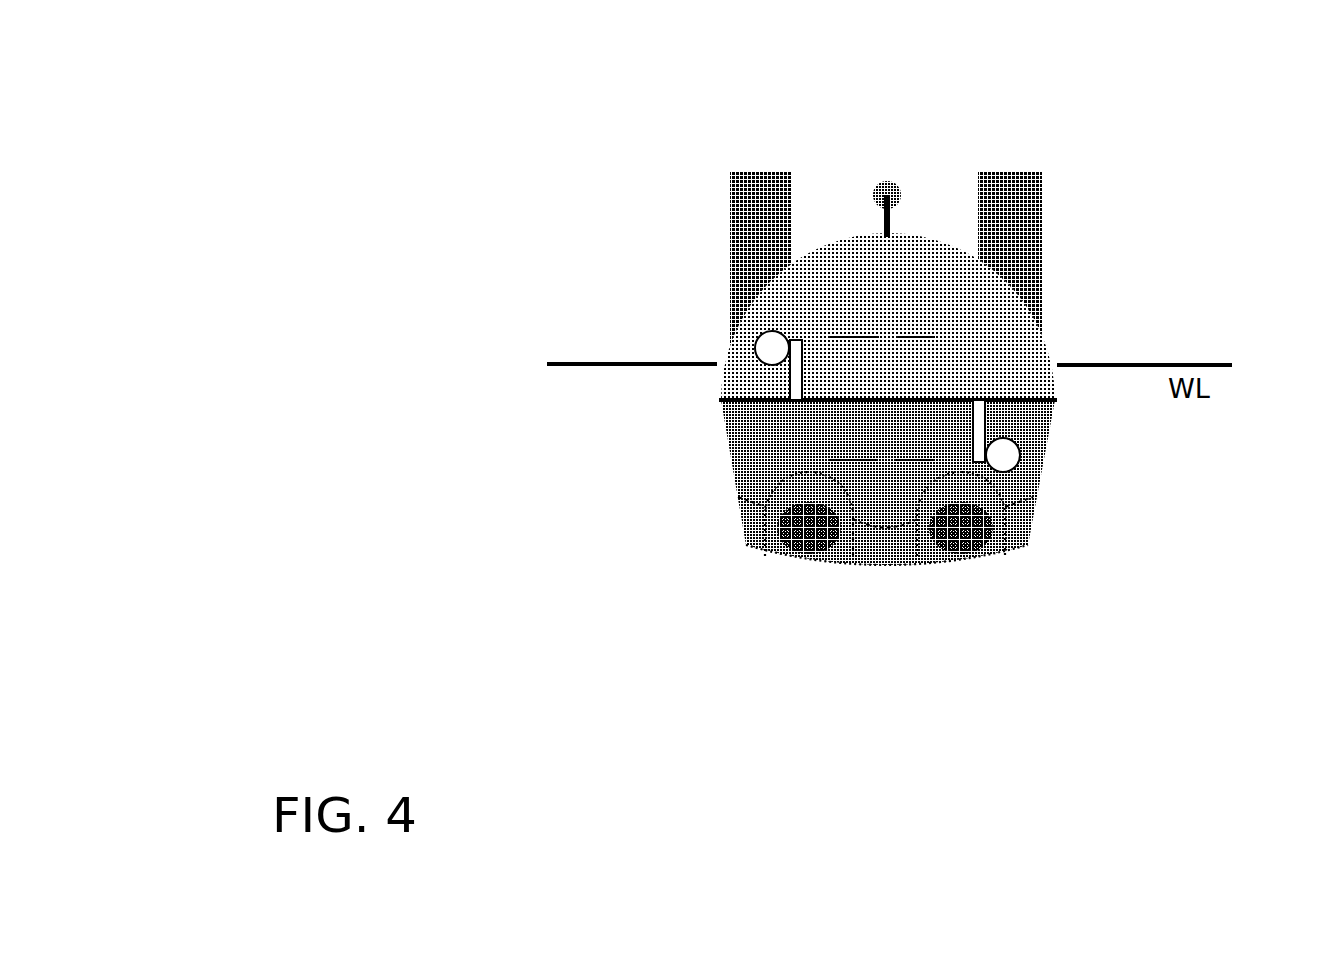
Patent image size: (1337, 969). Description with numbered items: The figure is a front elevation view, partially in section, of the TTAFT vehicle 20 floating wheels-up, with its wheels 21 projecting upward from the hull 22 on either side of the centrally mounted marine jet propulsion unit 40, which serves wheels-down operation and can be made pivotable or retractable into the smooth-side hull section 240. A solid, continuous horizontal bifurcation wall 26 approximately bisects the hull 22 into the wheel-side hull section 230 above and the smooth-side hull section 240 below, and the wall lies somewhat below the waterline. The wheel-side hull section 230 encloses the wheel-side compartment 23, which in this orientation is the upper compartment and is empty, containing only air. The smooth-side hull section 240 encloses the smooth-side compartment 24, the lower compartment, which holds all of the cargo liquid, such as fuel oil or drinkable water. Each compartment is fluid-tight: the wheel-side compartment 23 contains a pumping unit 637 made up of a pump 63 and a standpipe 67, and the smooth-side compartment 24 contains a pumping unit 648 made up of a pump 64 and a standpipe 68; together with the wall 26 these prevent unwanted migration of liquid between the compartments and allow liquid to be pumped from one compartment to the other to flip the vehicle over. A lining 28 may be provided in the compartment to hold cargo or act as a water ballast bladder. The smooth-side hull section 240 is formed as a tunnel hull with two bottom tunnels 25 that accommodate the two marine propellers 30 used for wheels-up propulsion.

The TTAFT vehicle 20 is at (1222, 238).
The wheels 21 is at (748, 215).
The hull 22 is at (671, 309).
The wheel-side compartment 23 is at (671, 227).
The smooth-side compartment 24 is at (671, 482).
The tunnels 25 is at (800, 548).
The horizontal bifurcation wall 26 is at (948, 399).
The lining 28 is at (1020, 507).
The marine propellers 30 is at (953, 523).
The marine jet propulsion unit 40 is at (888, 170).
The pump 63 is at (758, 359).
The pump 64 is at (1076, 447).
The standpipe 67 is at (862, 370).
The standpipe 68 is at (988, 425).
The wheel-side hull section 230 is at (850, 236).
The smooth-side hull section 240 is at (433, 485).
The pumping unit 637 is at (758, 359).
The pumping unit 648 is at (1076, 447).